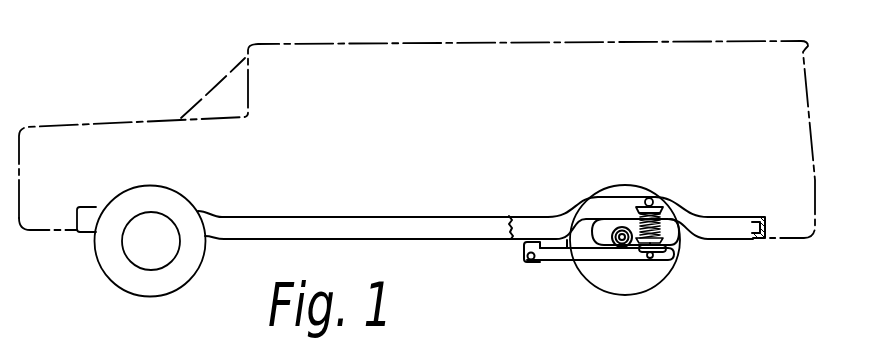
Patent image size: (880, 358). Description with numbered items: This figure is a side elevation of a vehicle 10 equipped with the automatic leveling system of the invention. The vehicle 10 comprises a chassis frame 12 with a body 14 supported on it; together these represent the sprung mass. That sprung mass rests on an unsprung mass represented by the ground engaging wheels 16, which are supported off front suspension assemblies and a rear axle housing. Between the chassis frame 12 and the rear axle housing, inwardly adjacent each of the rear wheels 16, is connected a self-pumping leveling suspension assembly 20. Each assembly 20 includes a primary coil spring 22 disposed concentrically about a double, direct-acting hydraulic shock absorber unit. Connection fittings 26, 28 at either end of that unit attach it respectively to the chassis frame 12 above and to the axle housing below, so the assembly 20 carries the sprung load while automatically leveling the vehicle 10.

The vehicle 10 is at (82, 233).
The chassis frame 12 is at (742, 231).
The body 14 is at (266, 44).
The ground engaging wheels 16 is at (152, 284).
The self-pumping leveling suspension assembly 20 is at (639, 232).
The primary coil spring 22 is at (637, 221).
The connection fitting 26 is at (648, 197).
The connection fitting 28 is at (647, 259).